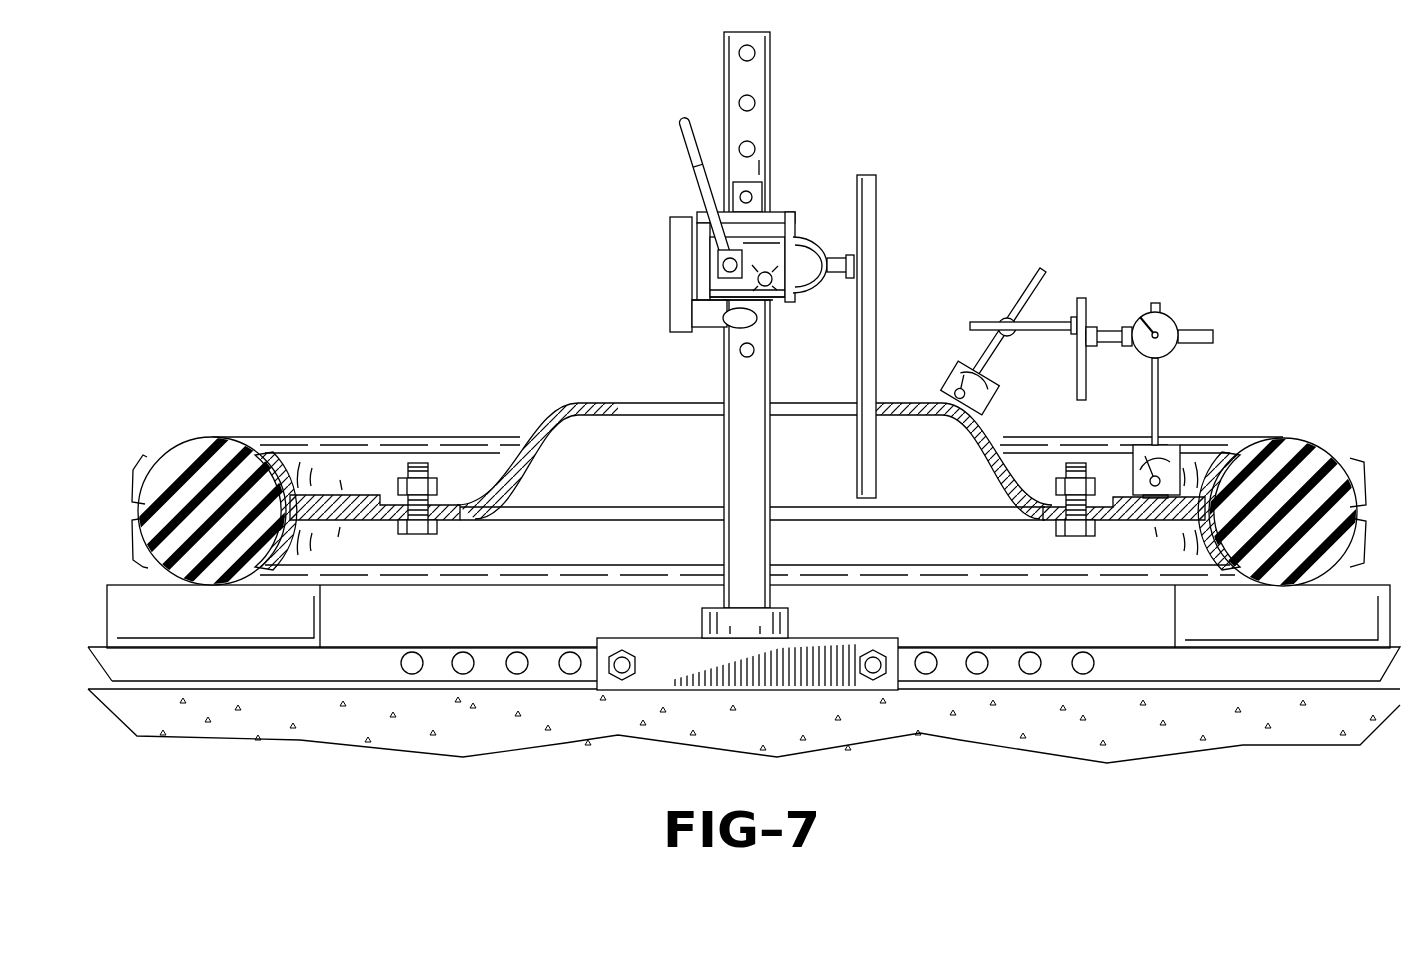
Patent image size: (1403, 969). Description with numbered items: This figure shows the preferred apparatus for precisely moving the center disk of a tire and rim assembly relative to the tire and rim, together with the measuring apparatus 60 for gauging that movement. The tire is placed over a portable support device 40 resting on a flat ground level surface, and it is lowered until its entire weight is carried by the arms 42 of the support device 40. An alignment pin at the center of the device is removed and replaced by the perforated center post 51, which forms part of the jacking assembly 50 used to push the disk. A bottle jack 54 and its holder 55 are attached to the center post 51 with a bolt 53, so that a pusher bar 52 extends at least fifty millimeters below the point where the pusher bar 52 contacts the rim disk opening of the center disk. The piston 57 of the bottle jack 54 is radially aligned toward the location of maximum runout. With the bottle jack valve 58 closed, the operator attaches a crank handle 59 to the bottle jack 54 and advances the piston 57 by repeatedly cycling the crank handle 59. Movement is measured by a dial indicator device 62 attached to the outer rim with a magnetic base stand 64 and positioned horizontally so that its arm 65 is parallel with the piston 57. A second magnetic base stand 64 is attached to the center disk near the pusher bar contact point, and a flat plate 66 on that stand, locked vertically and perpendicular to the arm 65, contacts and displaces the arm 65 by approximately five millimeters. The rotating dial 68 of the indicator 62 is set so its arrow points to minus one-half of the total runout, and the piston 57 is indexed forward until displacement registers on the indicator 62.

The portable support device 40 is at (663, 645).
The arms 42 is at (278, 620).
The upright post 50 is at (788, 82).
The perforated center post 51 is at (738, 380).
The pusher bar 52 is at (876, 200).
The bolt 53 is at (748, 196).
The bottle jack 54 is at (733, 289).
The holder 55 is at (703, 214).
The piston 57 is at (838, 268).
The bottle jack valve 58 is at (766, 287).
The crank handle 59 is at (688, 148).
The dial indicator assembly 60 is at (1175, 262).
The dial indicator device 62 is at (1168, 318).
The magnetic base stand 64 is at (950, 378).
The arm 65 is at (1112, 338).
The flat plate 66 is at (1081, 297).
The rotating dial 68 is at (1150, 330).